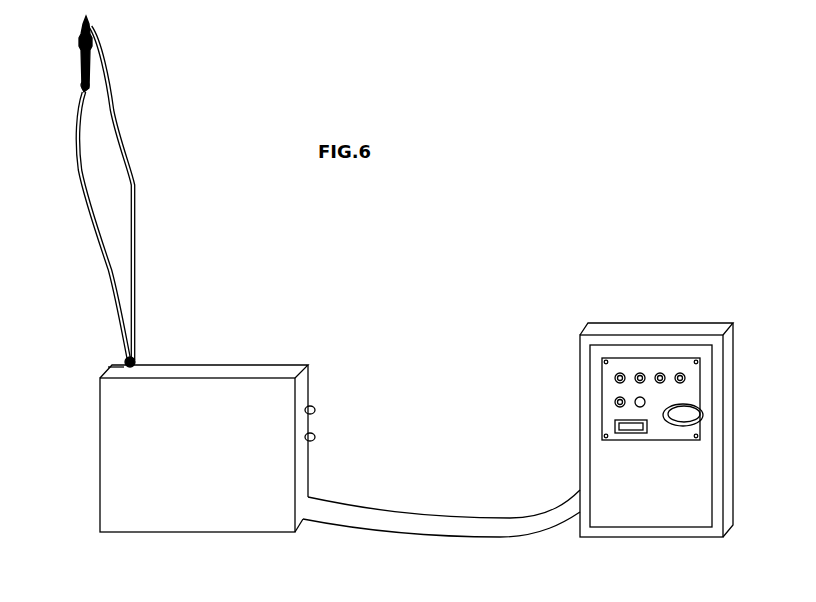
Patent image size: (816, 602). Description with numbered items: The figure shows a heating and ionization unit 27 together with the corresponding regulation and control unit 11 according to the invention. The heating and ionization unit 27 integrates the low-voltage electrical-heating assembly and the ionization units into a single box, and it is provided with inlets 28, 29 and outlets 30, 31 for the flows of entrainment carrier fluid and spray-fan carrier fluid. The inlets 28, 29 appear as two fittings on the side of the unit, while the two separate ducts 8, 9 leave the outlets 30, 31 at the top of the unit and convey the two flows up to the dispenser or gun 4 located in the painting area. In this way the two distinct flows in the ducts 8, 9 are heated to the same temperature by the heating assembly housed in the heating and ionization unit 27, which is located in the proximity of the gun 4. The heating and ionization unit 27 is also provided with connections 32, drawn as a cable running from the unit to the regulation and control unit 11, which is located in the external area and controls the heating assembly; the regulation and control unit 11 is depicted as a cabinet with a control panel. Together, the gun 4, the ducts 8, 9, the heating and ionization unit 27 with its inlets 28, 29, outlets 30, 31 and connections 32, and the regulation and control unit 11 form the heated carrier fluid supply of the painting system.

The gun 4 is at (80, 28).
The duct 8 is at (138, 218).
The duct 9 is at (104, 250).
The regulation and control unit 11 is at (662, 496).
The heating and ionization unit 27 is at (187, 462).
The inlet 28 is at (313, 431).
The inlet 29 is at (313, 405).
The outlet 30 is at (108, 367).
The outlet 31 is at (138, 360).
The connections 32 is at (428, 537).